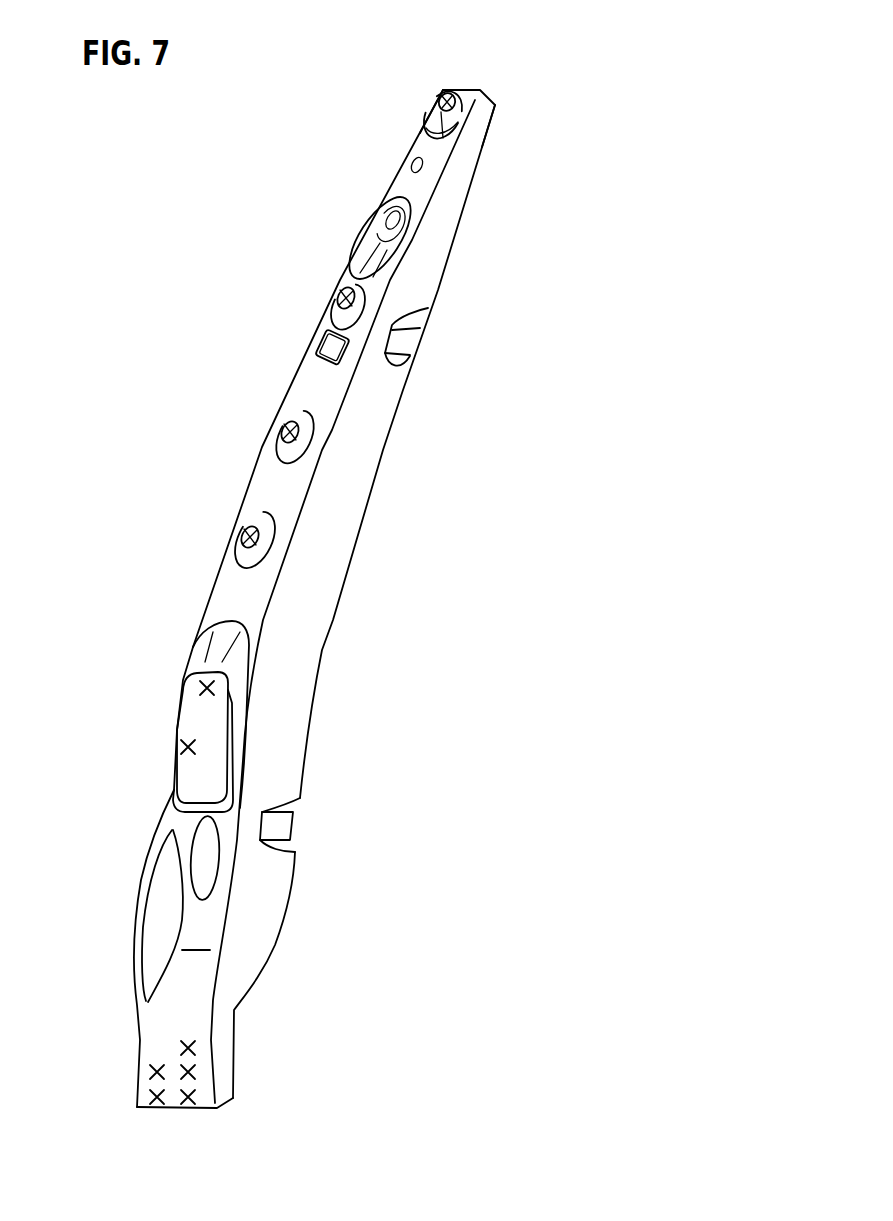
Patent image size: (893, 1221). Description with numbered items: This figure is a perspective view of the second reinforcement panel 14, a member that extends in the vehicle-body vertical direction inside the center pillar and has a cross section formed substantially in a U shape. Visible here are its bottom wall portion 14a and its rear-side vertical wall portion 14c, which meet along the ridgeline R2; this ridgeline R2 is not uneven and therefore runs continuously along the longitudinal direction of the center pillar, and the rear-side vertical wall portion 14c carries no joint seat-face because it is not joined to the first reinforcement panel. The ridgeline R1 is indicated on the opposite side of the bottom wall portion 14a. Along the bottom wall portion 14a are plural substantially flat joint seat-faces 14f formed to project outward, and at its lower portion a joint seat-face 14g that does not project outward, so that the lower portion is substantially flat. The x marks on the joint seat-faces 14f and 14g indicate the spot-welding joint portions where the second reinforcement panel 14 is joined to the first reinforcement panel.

The second reinforcement panel 14 is at (356, 76).
The bottom wall portion 14a is at (260, 476).
The rear-side vertical wall portion 14c is at (367, 470).
The joint seat-faces 14f is at (460, 86).
The joint seat-face 14g is at (216, 1064).
The first region R1 is at (392, 172).
The ridgeline R2 is at (449, 168).